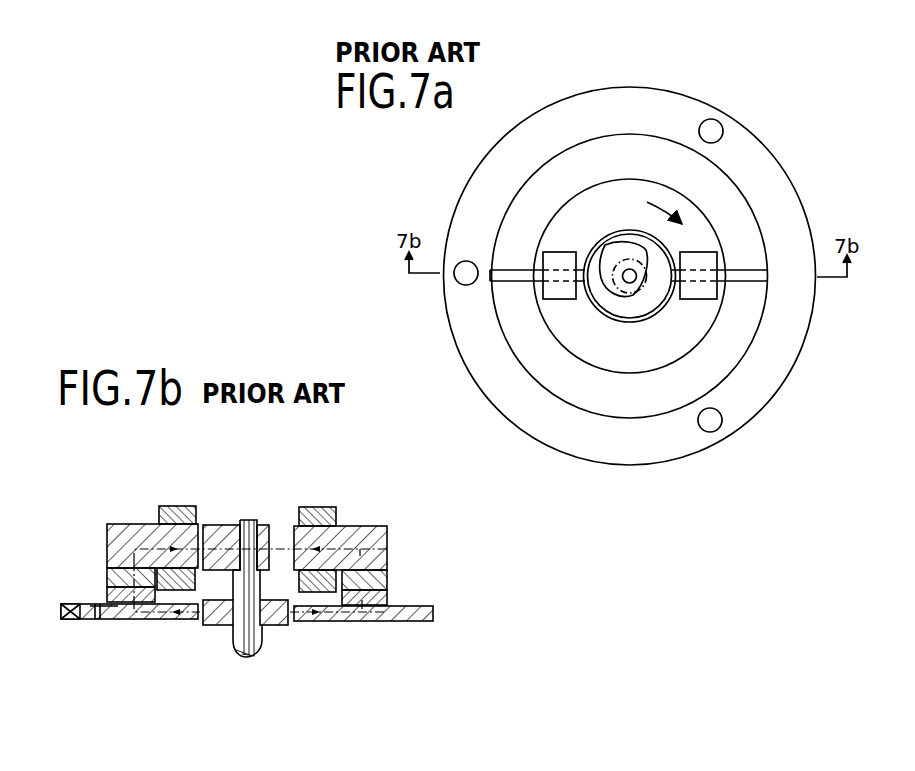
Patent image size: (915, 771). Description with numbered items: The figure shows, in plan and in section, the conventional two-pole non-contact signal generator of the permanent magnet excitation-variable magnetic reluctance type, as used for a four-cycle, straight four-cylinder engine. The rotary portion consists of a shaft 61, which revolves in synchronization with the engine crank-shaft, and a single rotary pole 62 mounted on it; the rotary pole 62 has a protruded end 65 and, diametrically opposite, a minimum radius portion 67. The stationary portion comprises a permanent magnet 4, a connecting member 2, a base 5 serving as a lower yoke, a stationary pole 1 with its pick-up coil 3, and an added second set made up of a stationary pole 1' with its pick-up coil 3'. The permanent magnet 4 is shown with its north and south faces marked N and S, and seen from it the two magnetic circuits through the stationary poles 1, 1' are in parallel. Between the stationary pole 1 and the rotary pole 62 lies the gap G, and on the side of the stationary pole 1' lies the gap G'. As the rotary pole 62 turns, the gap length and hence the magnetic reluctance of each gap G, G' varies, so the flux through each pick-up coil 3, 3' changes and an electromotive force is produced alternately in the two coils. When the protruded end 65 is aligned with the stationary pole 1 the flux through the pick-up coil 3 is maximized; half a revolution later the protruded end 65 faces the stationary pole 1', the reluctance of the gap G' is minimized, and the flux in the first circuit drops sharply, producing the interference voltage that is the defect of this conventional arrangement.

In FIG. 7A, the stationary pole 1 is at (505, 307).
In FIG. 7B, the stationary pole 1 is at (130, 505).
In FIG. 7A, the second stationary pole 1' is at (756, 308).
In FIG. 7B, the second stationary pole 1' is at (357, 506).
In FIG. 7A, the connecting member 2 is at (622, 145).
In FIG. 7B, the connecting member 2 is at (107, 575).
In FIG. 7A, the pick-up coil 3 is at (515, 328).
In FIG. 7B, the pick-up coil 3 is at (158, 511).
In FIG. 7A, the second pick-up coil 3' is at (750, 330).
In FIG. 7B, the second pick-up coil 3' is at (331, 513).
In FIG. 7B, the permanent magnet 4 is at (107, 592).
In FIG. 7A, the base 5 is at (482, 183).
In FIG. 7B, the base 5 is at (118, 612).
In FIG. 7B, the shaft 61 is at (263, 640).
In FIG. 7A, the rotary pole 62 is at (652, 243).
In FIG. 7B, the rotary pole 62 is at (222, 538).
In FIG. 7A, the protruded end 65 is at (605, 245).
In FIG. 7A, the minimum radius portion 67 is at (633, 291).
In FIG. 7B, the gap G is at (220, 470).
In FIG. 7B, the second gap G' is at (307, 474).
In FIG. 7B, the north pole N is at (128, 590).
In FIG. 7B, the south pole S is at (128, 598).